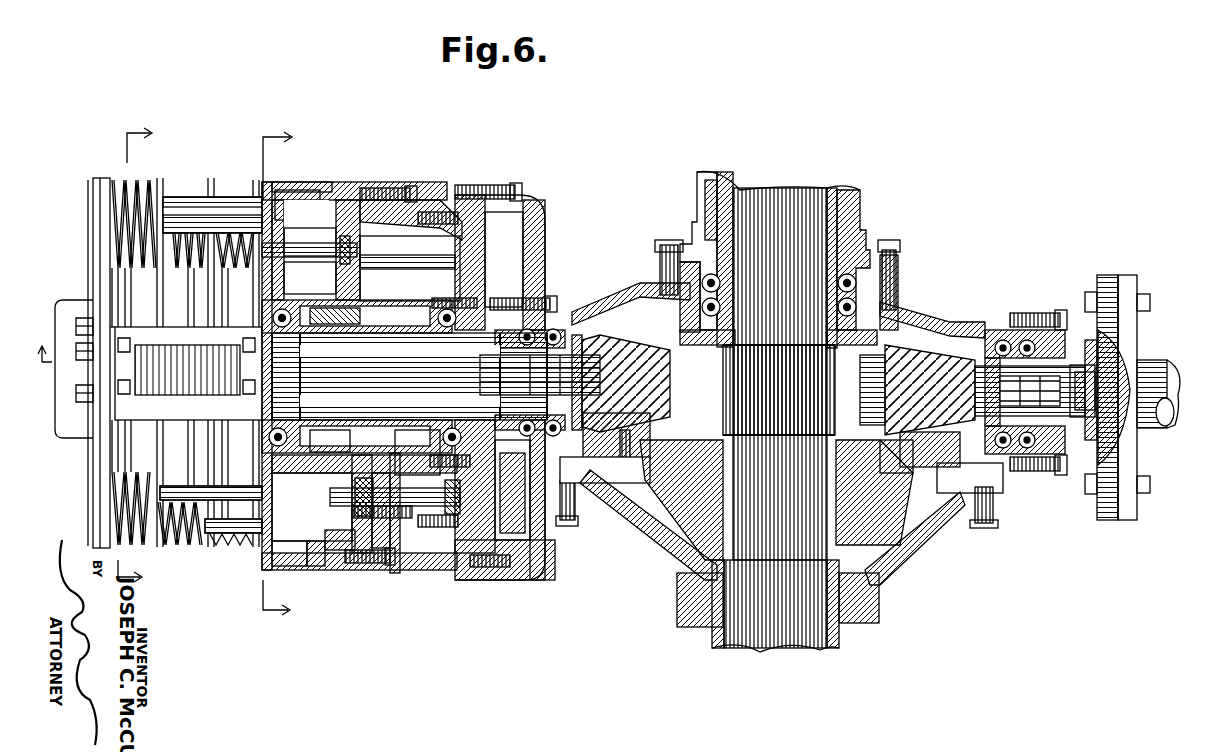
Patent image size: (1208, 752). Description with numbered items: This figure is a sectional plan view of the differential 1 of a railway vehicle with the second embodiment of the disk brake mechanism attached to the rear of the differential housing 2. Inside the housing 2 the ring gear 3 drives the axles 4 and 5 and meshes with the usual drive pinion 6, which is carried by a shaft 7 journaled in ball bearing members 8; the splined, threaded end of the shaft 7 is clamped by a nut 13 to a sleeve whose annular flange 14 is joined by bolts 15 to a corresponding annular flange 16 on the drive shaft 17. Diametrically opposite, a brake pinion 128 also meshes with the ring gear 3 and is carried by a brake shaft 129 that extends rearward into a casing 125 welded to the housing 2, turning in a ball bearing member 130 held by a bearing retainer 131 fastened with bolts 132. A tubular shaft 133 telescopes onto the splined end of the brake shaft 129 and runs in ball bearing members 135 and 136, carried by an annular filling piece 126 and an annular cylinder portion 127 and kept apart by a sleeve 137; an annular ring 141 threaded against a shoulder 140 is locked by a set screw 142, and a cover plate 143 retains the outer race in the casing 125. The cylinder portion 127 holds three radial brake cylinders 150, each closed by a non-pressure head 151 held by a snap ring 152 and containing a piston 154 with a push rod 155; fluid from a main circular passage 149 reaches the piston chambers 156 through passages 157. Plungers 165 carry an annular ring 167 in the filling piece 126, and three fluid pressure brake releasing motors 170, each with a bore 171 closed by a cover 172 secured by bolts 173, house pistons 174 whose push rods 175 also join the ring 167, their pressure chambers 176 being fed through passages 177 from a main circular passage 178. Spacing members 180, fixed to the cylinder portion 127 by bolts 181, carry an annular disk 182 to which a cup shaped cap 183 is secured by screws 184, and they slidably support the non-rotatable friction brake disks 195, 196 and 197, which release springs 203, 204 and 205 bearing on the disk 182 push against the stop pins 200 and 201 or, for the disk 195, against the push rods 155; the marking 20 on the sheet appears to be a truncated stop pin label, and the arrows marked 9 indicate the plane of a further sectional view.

The differential 1 is at (922, 576).
The differential housing 2 is at (595, 312).
The ring gear 3 is at (781, 470).
The axle 4 is at (765, 208).
The axle 5 is at (775, 648).
The drive pinion 6 is at (930, 380).
The shaft 7 is at (985, 370).
The ball bearing members 8 is at (1000, 332).
The section line 9- 9 is at (144, 361).
The nut 13 is at (1087, 365).
The annular flange 14 is at (1110, 278).
The bolts 15 is at (1150, 302).
The annular flange 16 is at (1140, 340).
The drive shaft 17 is at (1172, 395).
The spring 20 is at (185, 492).
The casing 125 is at (585, 318).
The annular filling piece 126 is at (462, 198).
The annular cylinder portion 127 is at (378, 200).
The brake pinion 128 is at (640, 352).
The brake shaft 129 is at (592, 350).
The ball bearing member 130 is at (566, 518).
The bearing retainer 131 is at (526, 338).
The bolts 132 is at (500, 298).
The tubular shaft 133 is at (415, 501).
The ball bearing member 135 is at (437, 300).
The ball bearing member 136 is at (290, 340).
The sleeve 137 is at (361, 401).
The shoulder 140 is at (440, 350).
The annular ring 141 is at (370, 418).
The set screw 142 is at (505, 490).
The cover plate 143 is at (433, 464).
The main circular passage 149 is at (442, 190).
The brake cylinders 150 is at (302, 209).
The non-pressure head 151 is at (310, 242).
The snap ring 152 is at (278, 200).
The piston 154 is at (332, 250).
The push rod 155 is at (310, 278).
The piston chambers 156 is at (410, 268).
The passages 157 is at (397, 191).
The plunger 165 is at (429, 364).
The annular ring 167 is at (504, 259).
The fluid pressure brake releasing motors 170 is at (350, 562).
The bore 171 is at (340, 530).
The cover 172 is at (385, 548).
The bolts 173 is at (288, 578).
The piston 174 is at (355, 480).
The push rod 175 is at (493, 558).
The pressure chambers 176 is at (330, 441).
The passages 177 is at (280, 535).
The main circular passage 178 is at (338, 200).
The spacing members 180 is at (135, 405).
The bolts 181 is at (243, 398).
The annular disk 182 is at (96, 186).
The cup shaped cap 183 is at (57, 340).
The screws 184 is at (90, 300).
The non-rotatable friction brake disk 195 is at (260, 240).
The non-rotatable friction brake disk 196 is at (222, 195).
The non-rotatable friction brake disk 197 is at (160, 180).
The stop pins 200 is at (232, 205).
The stop pins 201 is at (172, 190).
The release springs 203 is at (128, 182).
The release springs 204 is at (212, 204).
The release springs 205 is at (252, 240).